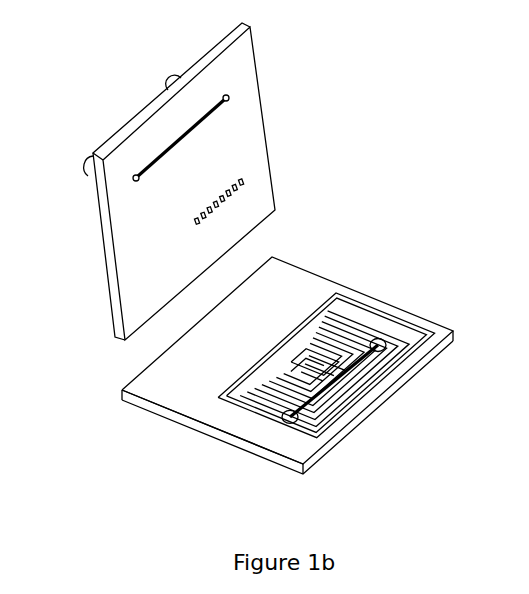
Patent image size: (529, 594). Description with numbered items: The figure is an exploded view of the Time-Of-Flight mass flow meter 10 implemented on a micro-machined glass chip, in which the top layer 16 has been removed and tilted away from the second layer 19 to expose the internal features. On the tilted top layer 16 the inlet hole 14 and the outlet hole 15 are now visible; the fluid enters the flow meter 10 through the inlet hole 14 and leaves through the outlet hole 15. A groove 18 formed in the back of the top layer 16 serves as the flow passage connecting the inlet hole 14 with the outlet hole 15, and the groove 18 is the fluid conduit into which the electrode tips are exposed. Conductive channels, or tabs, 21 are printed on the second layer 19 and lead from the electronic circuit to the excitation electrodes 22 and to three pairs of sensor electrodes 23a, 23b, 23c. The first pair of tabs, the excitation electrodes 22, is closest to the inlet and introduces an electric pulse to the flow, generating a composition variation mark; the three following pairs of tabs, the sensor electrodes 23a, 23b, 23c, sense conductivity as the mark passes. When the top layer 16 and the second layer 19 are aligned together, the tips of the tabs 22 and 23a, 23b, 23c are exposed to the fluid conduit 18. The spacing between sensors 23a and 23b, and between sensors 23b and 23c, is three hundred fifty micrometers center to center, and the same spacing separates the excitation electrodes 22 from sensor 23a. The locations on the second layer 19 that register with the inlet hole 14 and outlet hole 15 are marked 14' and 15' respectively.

The flow meter 10 is at (134, 424).
The inlet hole 14 is at (91, 232).
The outlet hole 15 is at (190, 65).
The top layer 16 is at (275, 63).
The groove 18 is at (156, 132).
The second layer 19 is at (193, 445).
The conductive channels (tabs) 21 is at (300, 318).
The excitation electrodes 22 is at (303, 430).
The inlet port 14' is at (237, 463).
The outlet port 15' is at (417, 320).
The sensor electrode pair 23a is at (340, 398).
The sensor electrode pair 23b is at (360, 395).
The sensor electrode pair 23c is at (381, 386).